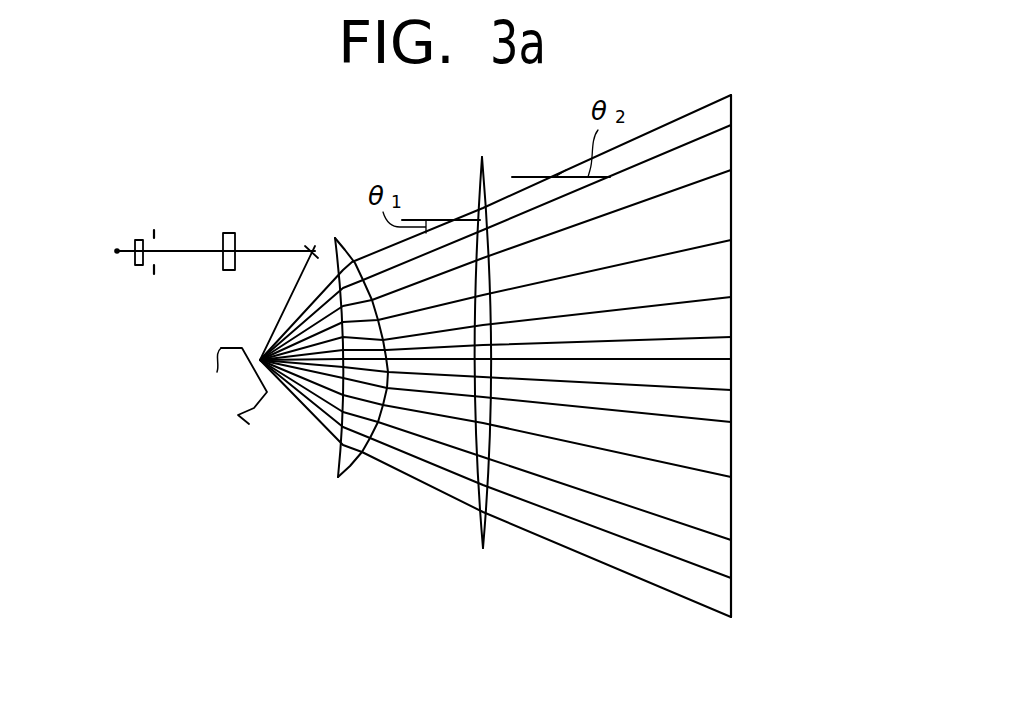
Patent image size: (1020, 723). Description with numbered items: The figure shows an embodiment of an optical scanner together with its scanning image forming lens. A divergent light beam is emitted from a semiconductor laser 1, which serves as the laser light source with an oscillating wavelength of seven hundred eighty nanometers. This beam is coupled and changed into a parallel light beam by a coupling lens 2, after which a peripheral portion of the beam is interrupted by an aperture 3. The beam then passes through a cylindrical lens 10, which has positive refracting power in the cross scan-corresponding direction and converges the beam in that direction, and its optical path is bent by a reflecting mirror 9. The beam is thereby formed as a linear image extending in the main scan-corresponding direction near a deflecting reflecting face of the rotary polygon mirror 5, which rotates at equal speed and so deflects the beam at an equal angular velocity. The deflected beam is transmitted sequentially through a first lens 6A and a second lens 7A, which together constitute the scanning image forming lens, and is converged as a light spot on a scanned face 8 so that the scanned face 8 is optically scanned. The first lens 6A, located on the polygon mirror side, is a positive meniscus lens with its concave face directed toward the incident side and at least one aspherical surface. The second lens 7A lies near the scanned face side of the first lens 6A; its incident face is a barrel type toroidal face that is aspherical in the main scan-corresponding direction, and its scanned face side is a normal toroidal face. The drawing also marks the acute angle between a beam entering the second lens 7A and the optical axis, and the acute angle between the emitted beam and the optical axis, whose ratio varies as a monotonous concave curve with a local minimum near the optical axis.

The semiconductor laser 1 is at (117, 251).
The coupling lens 2 is at (138, 239).
The aperture 3 is at (154, 231).
The cylindrical lens 10 is at (230, 233).
The reflecting mirror 9 is at (312, 244).
The rotary polygon mirror 5 is at (256, 405).
The first lens 6A is at (345, 467).
The second lens 7A is at (486, 533).
The scanned face 8 is at (737, 575).